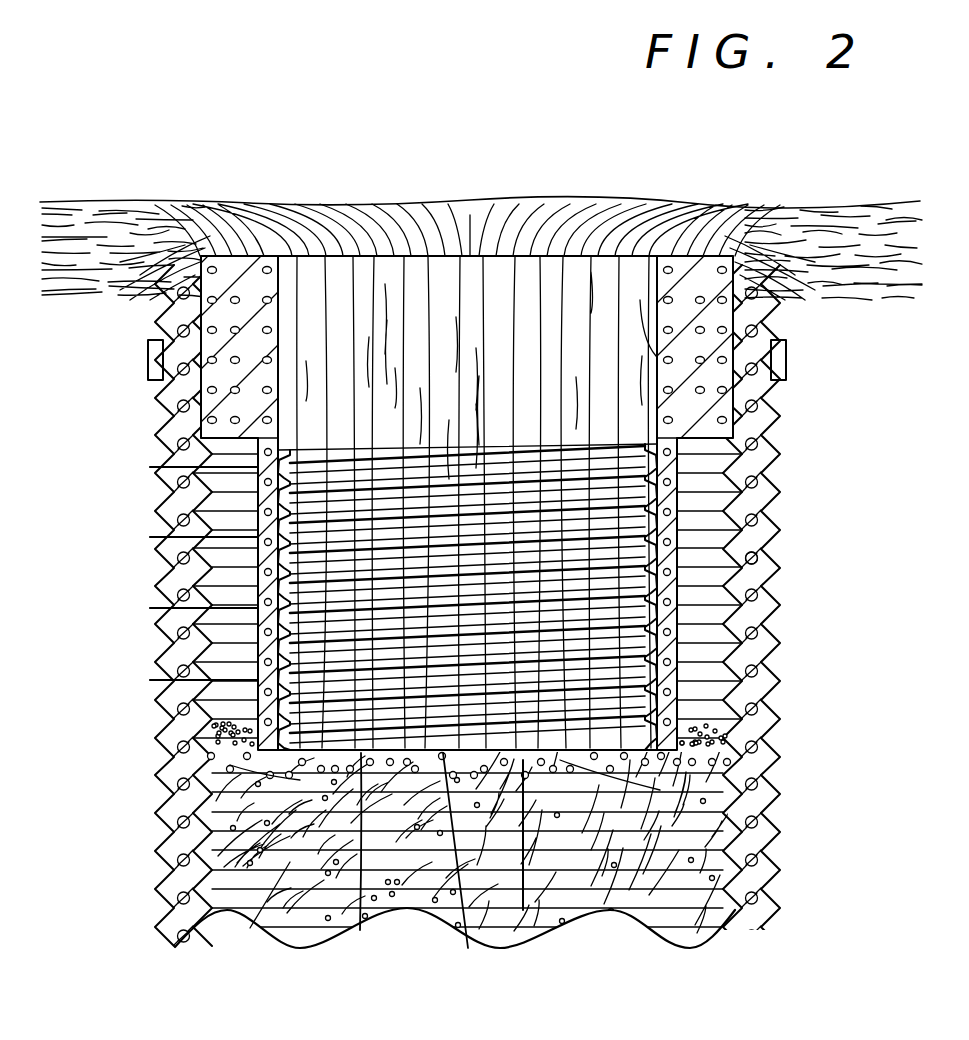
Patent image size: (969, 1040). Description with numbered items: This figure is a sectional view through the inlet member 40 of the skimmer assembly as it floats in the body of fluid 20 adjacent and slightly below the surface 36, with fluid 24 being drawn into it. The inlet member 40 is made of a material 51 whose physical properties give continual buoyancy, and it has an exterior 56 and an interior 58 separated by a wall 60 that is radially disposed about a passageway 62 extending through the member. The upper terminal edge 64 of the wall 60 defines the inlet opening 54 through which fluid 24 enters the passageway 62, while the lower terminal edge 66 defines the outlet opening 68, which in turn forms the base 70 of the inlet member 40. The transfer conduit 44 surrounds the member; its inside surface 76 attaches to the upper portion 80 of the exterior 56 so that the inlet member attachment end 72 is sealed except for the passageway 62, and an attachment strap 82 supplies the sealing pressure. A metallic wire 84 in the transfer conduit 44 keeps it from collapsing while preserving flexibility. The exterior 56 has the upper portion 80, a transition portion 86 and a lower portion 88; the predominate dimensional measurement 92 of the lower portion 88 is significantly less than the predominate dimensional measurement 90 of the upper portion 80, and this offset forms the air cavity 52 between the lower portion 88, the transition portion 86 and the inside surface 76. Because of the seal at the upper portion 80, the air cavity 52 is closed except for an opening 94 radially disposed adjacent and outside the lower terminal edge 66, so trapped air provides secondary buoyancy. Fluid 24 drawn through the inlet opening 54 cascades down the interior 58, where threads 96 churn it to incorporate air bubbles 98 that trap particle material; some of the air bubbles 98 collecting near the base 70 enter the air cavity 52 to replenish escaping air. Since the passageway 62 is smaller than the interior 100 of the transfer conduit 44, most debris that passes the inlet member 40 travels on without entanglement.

The body of fluid 20 is at (172, 210).
The fluid 24 is at (245, 862).
The surface 36 is at (795, 190).
The inlet member 40 is at (708, 441).
The transfer conduit 44 is at (170, 652).
The material 51 is at (710, 312).
The air cavity 52 is at (703, 540).
The inlet opening 54 is at (523, 325).
The exterior 56 is at (203, 323).
The interior 58 is at (655, 357).
The wall 60 is at (226, 396).
The passageway 62 is at (385, 318).
The upper terminal edge 64 is at (303, 256).
The lower terminal edge 66 is at (522, 910).
The outlet opening 68 is at (468, 948).
The base 70 is at (360, 930).
The inlet member attachment end 72 is at (768, 852).
The inside surface 76 is at (233, 692).
The upper portion 80 is at (740, 418).
The attachment strap 82 is at (148, 360).
The metallic wire 84 is at (758, 565).
The transition portion 86 is at (235, 450).
The lower portion 88 is at (678, 690).
The predominate dimensional measurement 90 is at (197, 255).
The predominate dimensional measurement 92 is at (286, 575).
The opening 94 is at (222, 748).
The threads 96 is at (286, 607).
The air bubbles 98 is at (705, 793).
The interior 100 is at (250, 928).